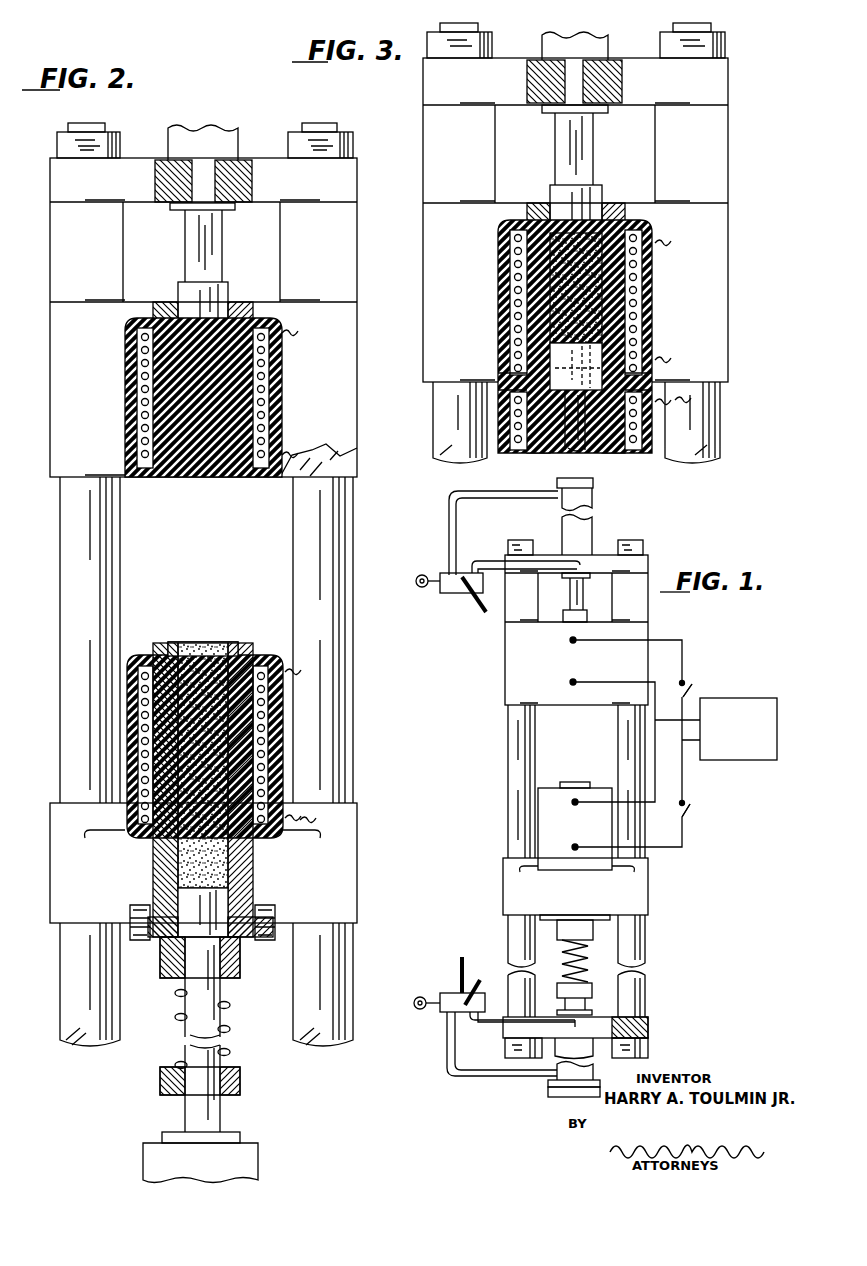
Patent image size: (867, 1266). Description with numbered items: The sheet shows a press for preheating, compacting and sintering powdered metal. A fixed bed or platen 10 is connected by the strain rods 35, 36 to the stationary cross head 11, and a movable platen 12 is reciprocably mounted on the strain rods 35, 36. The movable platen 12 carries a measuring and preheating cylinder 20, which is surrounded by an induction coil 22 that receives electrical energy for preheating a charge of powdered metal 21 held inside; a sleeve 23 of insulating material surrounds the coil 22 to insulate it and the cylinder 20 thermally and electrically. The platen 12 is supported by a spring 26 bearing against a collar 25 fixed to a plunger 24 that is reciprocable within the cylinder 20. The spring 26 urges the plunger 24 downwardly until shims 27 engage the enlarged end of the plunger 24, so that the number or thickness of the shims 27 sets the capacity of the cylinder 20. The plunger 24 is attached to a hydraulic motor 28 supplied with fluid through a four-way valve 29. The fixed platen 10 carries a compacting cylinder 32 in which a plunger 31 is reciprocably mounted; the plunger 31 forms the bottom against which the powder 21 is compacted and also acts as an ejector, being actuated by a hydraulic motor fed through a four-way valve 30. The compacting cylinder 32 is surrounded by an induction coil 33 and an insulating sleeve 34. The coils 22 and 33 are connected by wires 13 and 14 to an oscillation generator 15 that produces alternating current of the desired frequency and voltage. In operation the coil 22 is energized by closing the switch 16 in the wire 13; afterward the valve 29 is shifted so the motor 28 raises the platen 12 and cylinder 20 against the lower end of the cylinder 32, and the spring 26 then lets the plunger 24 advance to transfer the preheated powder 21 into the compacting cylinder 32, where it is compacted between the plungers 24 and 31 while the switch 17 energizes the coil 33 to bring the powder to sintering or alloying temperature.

In FIG. 2, the fixed platen 10 is at (345, 360).
In FIG. 3, the fixed platen 10 is at (430, 290).
In FIG. 1, the fixed platen 10 is at (512, 667).
In FIG. 1, the stationary cross head 11 is at (612, 1025).
In FIG. 2, the movable platen 12 is at (345, 850).
In FIG. 1, the movable platen 12 is at (510, 880).
In FIG. 1, the wire 13 is at (684, 668).
In FIG. 1, the wire 14 is at (627, 681).
In FIG. 1, the oscillation generator 15 is at (768, 692).
In FIG. 1, the switch 16 is at (692, 813).
In FIG. 1, the switch 17 is at (695, 693).
In FIG. 2, the measuring and preheating cylinder 20 is at (235, 880).
In FIG. 3, the measuring and preheating cylinder 20 is at (617, 443).
In FIG. 1, the measuring and preheating cylinder 20 is at (587, 836).
In FIG. 2, the powdered metal 21 is at (192, 842).
In FIG. 3, the powdered metal 21 is at (575, 290).
In FIG. 2, the induction coil 22 is at (262, 730).
In FIG. 2, the insulating sleeve 23 is at (262, 750).
In FIG. 2, the plunger 24 is at (190, 900).
In FIG. 3, the plunger 24 is at (592, 352).
In FIG. 2, the collar 25 is at (242, 1082).
In FIG. 1, the collar 25 is at (594, 992).
In FIG. 2, the spring 26 is at (222, 1030).
In FIG. 1, the spring 26 is at (564, 968).
In FIG. 2, the shims 27 is at (242, 985).
In FIG. 1, the shims 27 is at (575, 930).
In FIG. 2, the hydraulic motor 28 is at (245, 1160).
In FIG. 1, the hydraulic motor 28 is at (548, 1092).
In FIG. 1, the four-way valve 29 is at (450, 995).
In FIG. 1, the four-way valve 30 is at (448, 588).
In FIG. 2, the plunger 31 is at (220, 296).
In FIG. 3, the plunger 31 is at (596, 193).
In FIG. 1, the plunger 31 is at (586, 614).
In FIG. 2, the compacting cylinder 32 is at (228, 362).
In FIG. 3, the compacting cylinder 32 is at (615, 278).
In FIG. 2, the induction coil 33 is at (262, 395).
In FIG. 3, the induction coil 33 is at (632, 292).
In FIG. 2, the insulating sleeve 34 is at (276, 418).
In FIG. 3, the insulating sleeve 34 is at (645, 322).
In FIG. 2, the strain rod 35 is at (296, 566).
In FIG. 3, the strain rod 35 is at (713, 410).
In FIG. 1, the strain rod 35 is at (620, 745).
In FIG. 2, the strain rod 36 is at (100, 598).
In FIG. 3, the strain rod 36 is at (438, 428).
In FIG. 1, the strain rod 36 is at (515, 752).